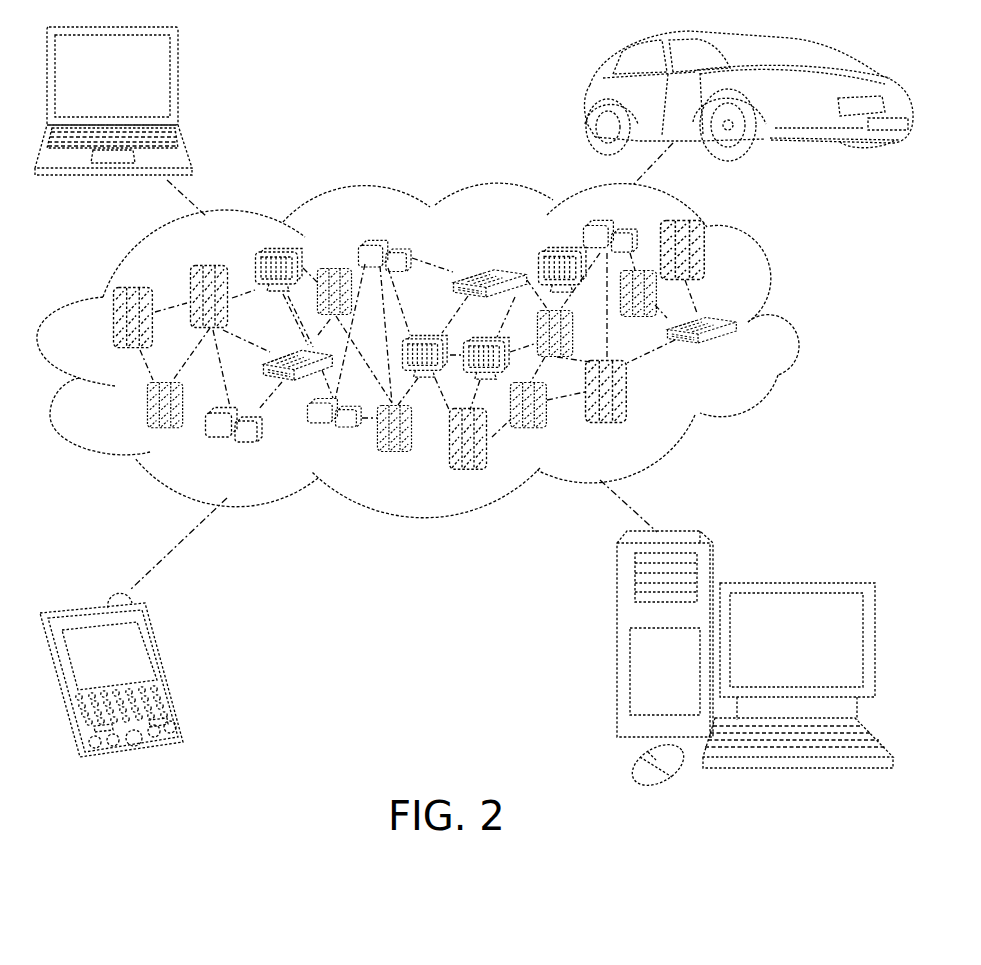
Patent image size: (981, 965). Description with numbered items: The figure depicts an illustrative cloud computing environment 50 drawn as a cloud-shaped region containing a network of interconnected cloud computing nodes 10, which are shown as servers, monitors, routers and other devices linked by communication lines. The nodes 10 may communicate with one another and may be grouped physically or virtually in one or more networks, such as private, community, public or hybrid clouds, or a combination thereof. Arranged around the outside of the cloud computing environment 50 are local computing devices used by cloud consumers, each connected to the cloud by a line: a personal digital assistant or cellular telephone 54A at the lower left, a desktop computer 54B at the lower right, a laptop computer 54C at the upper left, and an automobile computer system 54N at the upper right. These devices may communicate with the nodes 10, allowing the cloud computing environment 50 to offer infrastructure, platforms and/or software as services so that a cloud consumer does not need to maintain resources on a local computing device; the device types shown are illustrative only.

The cloud computing environment 50 is at (797, 324).
The cloud computing nodes 10 is at (747, 355).
The personal digital assistant (PDA) or cellular telephone 54A is at (165, 667).
The desktop computer 54B is at (793, 583).
The laptop computer 54C is at (181, 84).
The automobile computer system 54N is at (578, 95).